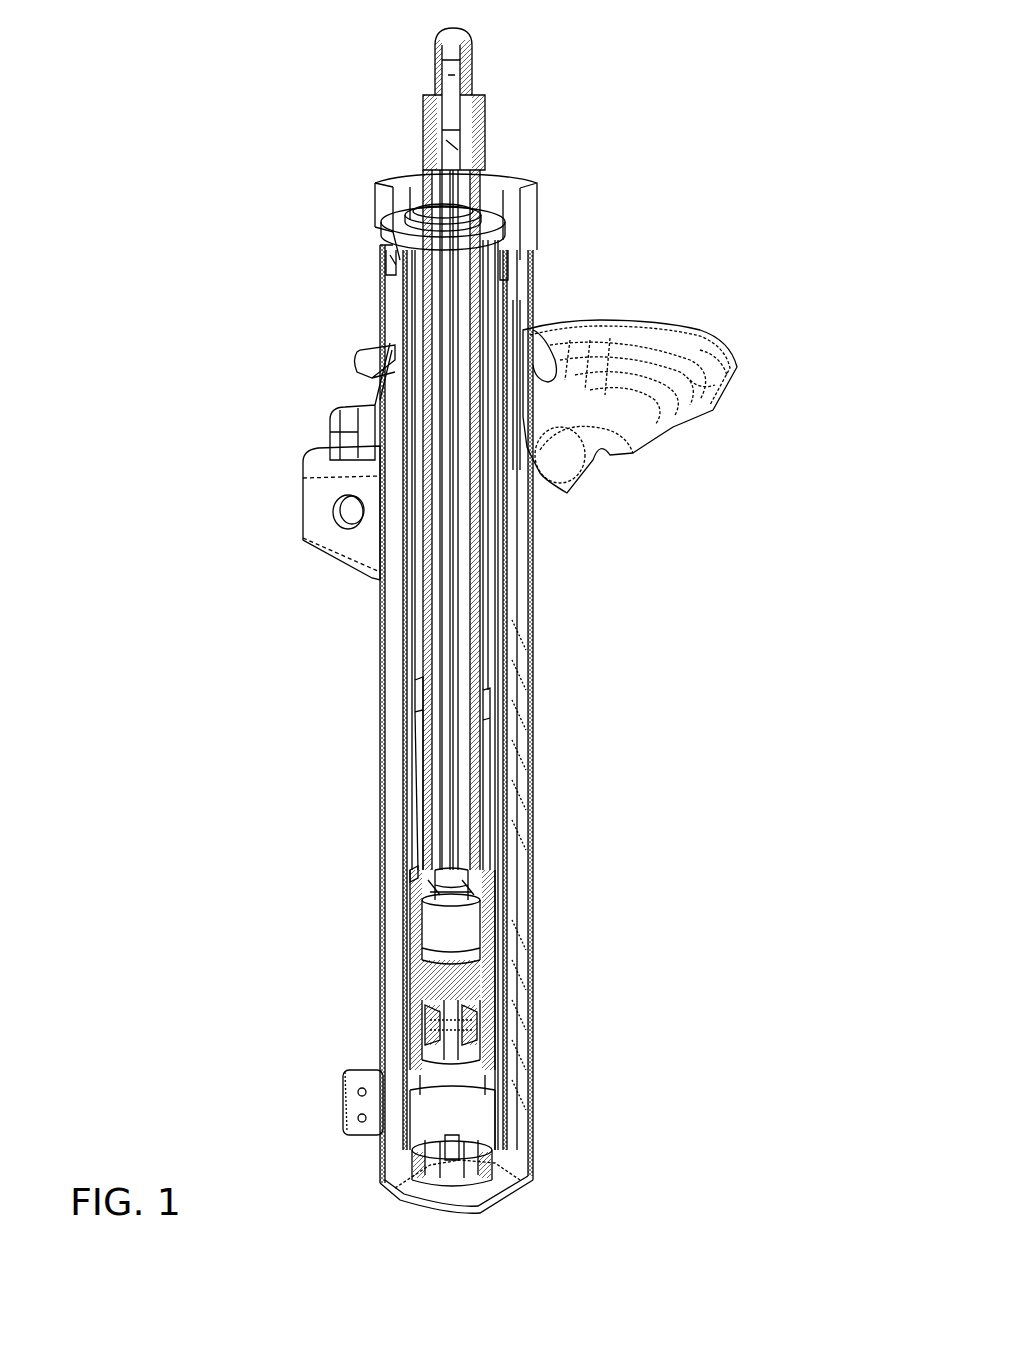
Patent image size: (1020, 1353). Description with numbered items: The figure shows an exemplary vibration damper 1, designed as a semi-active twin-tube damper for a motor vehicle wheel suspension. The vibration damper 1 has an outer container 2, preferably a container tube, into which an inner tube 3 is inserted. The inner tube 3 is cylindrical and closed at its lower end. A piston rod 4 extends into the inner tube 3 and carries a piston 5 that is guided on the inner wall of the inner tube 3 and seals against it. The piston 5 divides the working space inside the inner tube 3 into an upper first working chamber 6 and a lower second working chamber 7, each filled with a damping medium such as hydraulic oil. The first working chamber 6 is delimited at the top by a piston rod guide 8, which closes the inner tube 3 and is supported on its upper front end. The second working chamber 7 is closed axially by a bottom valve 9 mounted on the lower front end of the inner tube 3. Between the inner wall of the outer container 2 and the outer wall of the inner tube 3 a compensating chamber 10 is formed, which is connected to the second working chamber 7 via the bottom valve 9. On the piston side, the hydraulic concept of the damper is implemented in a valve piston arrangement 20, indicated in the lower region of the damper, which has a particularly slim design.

The vibration damper 1 is at (255, 173).
The outer container 2 is at (509, 794).
The inner tube 3 is at (496, 745).
The piston rod 4 is at (472, 630).
The piston 5 is at (490, 927).
The first working chamber 6 is at (412, 838).
The second working chamber 7 is at (464, 1118).
The piston rod guide 8 is at (493, 255).
The bottom valve 9 is at (478, 1167).
The compensating chamber 10 is at (513, 1035).
The valve piston arrangement 20 is at (337, 868).